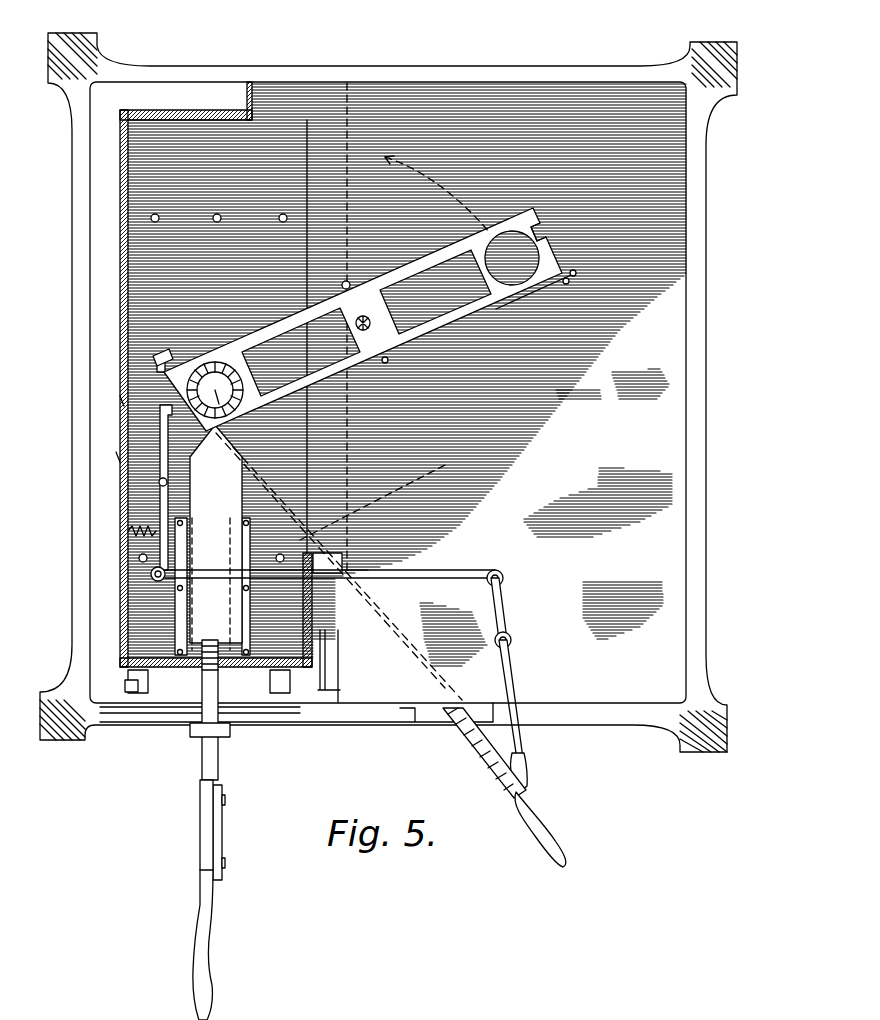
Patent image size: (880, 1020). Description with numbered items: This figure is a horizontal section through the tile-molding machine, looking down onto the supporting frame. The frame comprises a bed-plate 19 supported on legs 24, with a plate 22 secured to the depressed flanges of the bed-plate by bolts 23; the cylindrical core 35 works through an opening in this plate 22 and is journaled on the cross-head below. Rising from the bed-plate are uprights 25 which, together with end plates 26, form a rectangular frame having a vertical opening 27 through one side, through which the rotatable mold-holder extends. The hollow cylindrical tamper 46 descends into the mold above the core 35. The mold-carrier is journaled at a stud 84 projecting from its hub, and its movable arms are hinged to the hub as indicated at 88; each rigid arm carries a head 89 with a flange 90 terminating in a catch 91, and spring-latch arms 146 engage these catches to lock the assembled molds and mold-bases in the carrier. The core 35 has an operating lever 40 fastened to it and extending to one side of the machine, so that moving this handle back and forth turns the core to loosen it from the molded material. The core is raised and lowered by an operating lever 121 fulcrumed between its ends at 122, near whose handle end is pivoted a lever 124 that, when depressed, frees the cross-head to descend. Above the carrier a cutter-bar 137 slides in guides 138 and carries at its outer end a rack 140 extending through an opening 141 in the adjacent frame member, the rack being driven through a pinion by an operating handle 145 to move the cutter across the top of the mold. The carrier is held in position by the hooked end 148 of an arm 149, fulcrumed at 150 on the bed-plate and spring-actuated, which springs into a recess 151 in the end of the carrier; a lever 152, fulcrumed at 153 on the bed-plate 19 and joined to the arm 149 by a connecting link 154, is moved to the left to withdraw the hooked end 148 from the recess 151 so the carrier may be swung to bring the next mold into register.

The bed-plate 19 is at (546, 517).
The plate 22 is at (407, 370).
The bolts 23 is at (281, 222).
The legs 24 is at (100, 57).
The uprights 25 is at (118, 457).
The end plates 26 is at (212, 110).
The vertical opening 27 is at (372, 502).
The core 35 is at (227, 362).
The operating lever 40 is at (543, 825).
The tamper 46 is at (164, 356).
The stud 84 is at (367, 454).
The hinge 88 is at (388, 363).
The head 89 is at (488, 240).
The flange 90 is at (560, 257).
The catch 91 is at (565, 290).
The operating lever 121 is at (203, 877).
The fulcrum 122 is at (192, 728).
The lever 124 is at (220, 857).
The cutter-bar 137 is at (212, 540).
The guides 138 is at (130, 617).
The rack 140 is at (214, 768).
The opening 141 is at (197, 673).
The operating handle 145 is at (325, 660).
The spring-latch arms 146 is at (570, 284).
The hooked end 148 is at (127, 388).
The arm 149 is at (161, 455).
The fulcrum 150 is at (118, 500).
The recess 151 is at (122, 402).
The lever 152 is at (512, 673).
The fulcrum 153 is at (510, 633).
The connecting link 154 is at (412, 572).